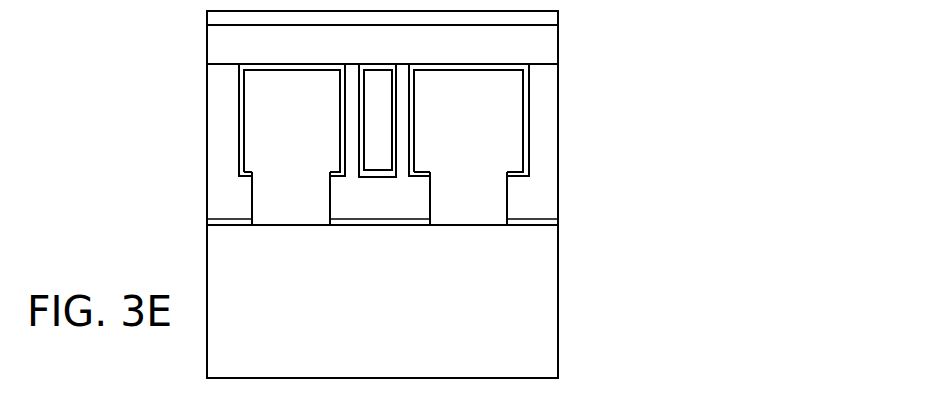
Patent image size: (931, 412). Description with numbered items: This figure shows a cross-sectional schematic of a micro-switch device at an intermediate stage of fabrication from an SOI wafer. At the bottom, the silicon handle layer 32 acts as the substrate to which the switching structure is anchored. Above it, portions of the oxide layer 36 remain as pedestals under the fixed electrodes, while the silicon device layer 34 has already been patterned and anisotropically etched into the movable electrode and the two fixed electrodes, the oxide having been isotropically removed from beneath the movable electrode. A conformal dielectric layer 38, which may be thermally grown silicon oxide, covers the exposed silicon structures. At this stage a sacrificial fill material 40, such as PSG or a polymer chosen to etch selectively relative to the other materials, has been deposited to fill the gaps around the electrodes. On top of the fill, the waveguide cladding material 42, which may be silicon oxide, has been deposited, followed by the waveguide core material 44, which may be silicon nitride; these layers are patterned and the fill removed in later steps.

The silicon handle layer 32 is at (558, 300).
The silicon device layer 34 is at (257, 132).
The oxide layer 36 is at (507, 198).
The conformal dielectric layer 38 is at (529, 103).
The sacrificial fill material 40 is at (548, 80).
The waveguide cladding material 42 is at (558, 43).
The waveguide core material 44 is at (558, 17).